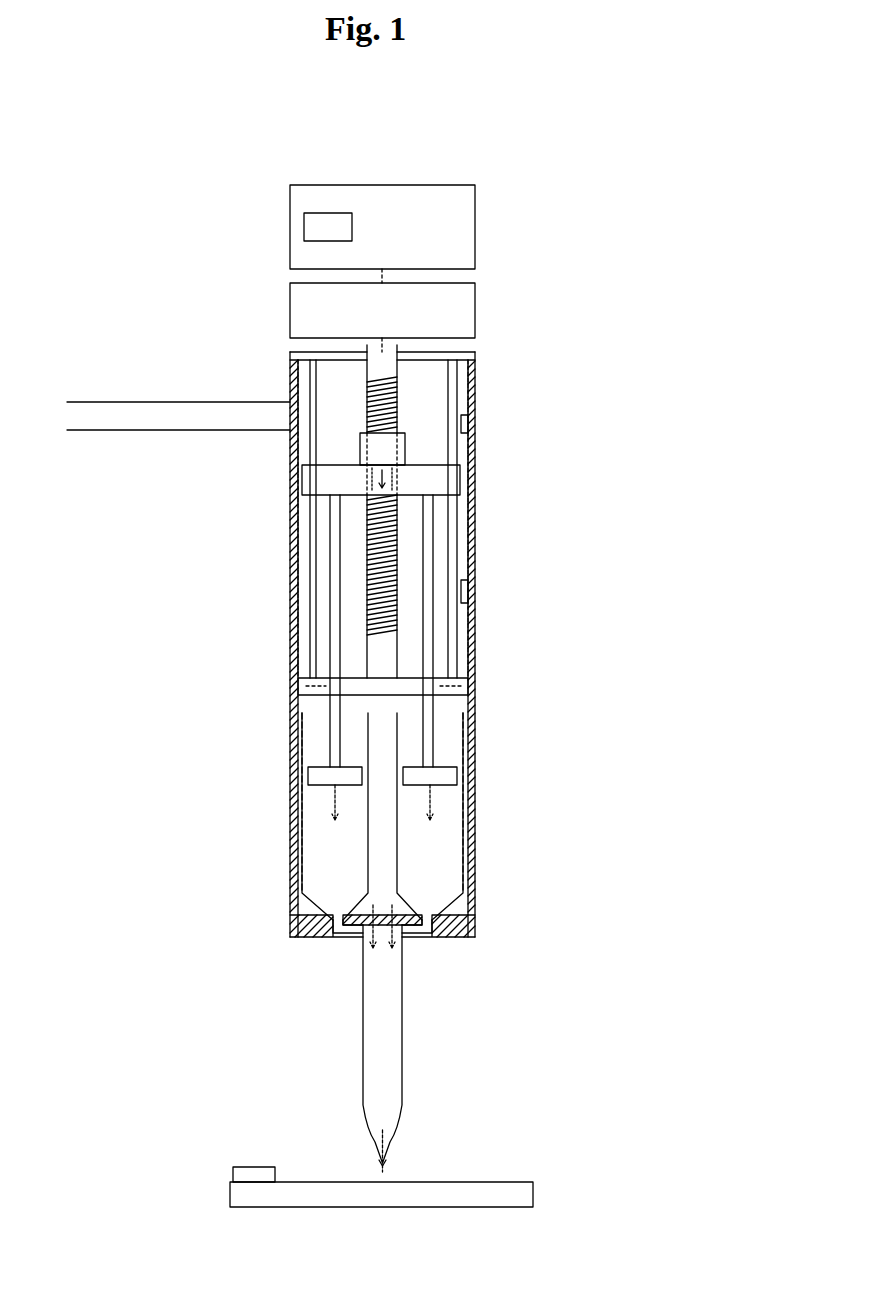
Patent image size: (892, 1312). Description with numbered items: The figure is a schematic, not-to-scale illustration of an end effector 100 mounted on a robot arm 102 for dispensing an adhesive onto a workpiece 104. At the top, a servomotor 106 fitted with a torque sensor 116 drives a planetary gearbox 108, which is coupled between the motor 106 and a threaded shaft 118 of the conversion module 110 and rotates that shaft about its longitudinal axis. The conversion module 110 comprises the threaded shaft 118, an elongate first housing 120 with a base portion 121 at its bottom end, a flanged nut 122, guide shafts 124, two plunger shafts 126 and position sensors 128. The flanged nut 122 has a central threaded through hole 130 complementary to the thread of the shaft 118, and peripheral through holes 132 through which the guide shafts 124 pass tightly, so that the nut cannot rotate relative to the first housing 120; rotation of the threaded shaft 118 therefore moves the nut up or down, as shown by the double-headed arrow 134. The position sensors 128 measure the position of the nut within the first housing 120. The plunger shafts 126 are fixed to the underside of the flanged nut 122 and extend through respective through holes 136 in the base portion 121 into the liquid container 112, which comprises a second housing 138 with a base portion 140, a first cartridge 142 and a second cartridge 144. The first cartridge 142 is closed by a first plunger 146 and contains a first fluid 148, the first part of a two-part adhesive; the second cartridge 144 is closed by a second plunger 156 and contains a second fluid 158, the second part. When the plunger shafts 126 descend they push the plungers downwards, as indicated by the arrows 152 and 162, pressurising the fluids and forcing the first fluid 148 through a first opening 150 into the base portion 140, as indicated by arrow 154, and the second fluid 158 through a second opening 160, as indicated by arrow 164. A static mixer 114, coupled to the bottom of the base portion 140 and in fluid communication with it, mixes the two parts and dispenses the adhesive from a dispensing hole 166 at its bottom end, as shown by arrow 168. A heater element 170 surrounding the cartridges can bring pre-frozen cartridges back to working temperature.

The end effector 100 is at (226, 198).
The robot arm 102 is at (120, 412).
The workpiece 104 is at (502, 1182).
The motor 106 is at (458, 216).
The gearbox 108 is at (458, 305).
The conversion module 110 is at (556, 353).
The liquid container 112 is at (558, 702).
The static mixer 114 is at (403, 1040).
The torque sensor 116 is at (313, 213).
The threaded shaft 118 is at (400, 410).
The first housing 120 is at (462, 377).
The base portion 121 is at (440, 690).
The flanged nut 122 is at (440, 466).
The guide shafts 124 is at (297, 444).
The plunger shafts 126 is at (330, 595).
The position sensors 128 is at (467, 425).
The central threaded through hole 130 is at (398, 480).
The peripheral through holes 132 is at (461, 481).
The movement direction of flanged nut 134 is at (370, 490).
The through holes 136 is at (330, 688).
The second housing 138 is at (302, 805).
The base portion 140 is at (444, 934).
The first cartridge 142 is at (300, 872).
The second cartridge 144 is at (464, 862).
The first plunger 146 is at (320, 778).
The first fluid 148 is at (336, 866).
The first opening 150 is at (320, 932).
The downwards movement of first plunger 152 is at (335, 812).
The flow of first fluid 154 is at (370, 950).
The second plunger 156 is at (440, 778).
The second fluid 158 is at (429, 866).
The second opening 160 is at (476, 928).
The downwards movement of second plunger 162 is at (430, 812).
The flow of second fluid 164 is at (395, 950).
The dispensing hole 166 is at (388, 1163).
The dispensed flow 168 is at (380, 1165).
The heater element 170 is at (243, 1167).